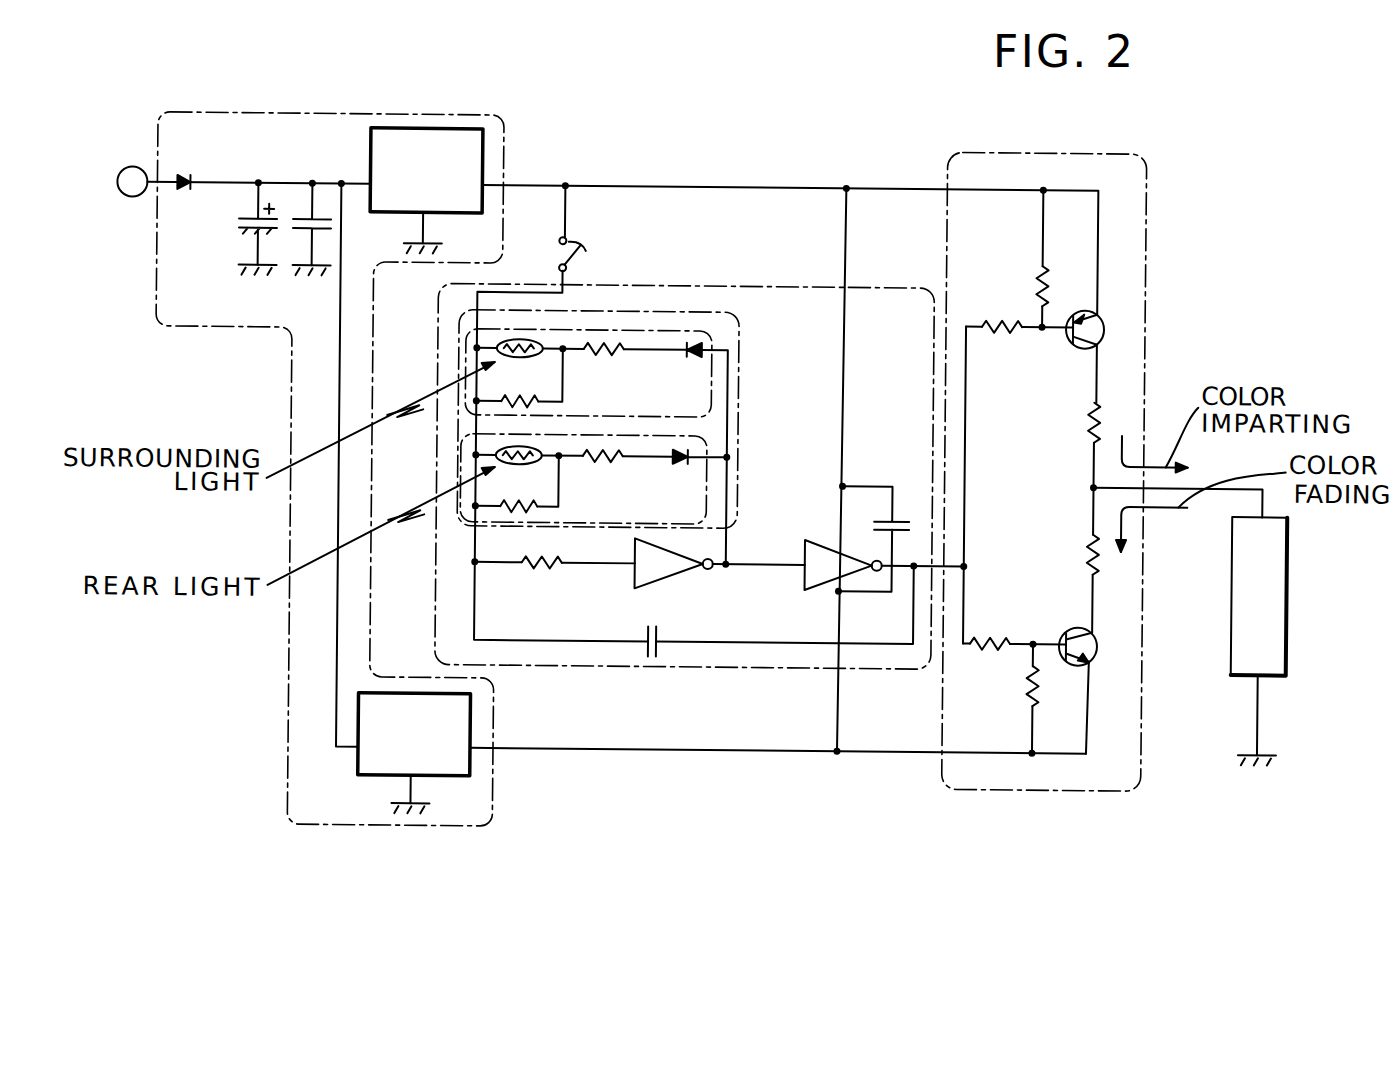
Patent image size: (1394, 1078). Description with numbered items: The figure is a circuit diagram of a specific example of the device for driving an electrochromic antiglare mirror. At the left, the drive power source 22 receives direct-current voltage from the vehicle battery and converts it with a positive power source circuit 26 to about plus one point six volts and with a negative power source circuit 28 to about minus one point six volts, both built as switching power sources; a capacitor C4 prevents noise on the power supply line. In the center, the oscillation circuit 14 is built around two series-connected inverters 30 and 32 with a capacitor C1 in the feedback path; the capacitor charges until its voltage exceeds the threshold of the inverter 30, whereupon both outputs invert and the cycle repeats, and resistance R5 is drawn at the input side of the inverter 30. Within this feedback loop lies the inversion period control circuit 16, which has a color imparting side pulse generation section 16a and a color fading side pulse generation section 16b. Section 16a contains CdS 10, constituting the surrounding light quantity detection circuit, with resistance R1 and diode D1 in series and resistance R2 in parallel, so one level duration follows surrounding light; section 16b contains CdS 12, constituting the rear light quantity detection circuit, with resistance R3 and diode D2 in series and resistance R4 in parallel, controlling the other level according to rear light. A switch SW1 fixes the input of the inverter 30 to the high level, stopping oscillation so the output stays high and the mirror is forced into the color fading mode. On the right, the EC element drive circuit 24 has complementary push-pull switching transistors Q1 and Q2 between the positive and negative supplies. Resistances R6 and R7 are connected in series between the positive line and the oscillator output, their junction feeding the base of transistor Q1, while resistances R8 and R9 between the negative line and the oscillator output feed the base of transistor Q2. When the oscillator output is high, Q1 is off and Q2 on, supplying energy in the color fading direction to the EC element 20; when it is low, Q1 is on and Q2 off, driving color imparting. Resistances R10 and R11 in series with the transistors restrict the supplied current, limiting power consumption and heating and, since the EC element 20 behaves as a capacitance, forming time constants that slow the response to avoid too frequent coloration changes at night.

The surrounding light quantity detection circuit 10 is at (546, 358).
The rear light quantity detection circuit 12 is at (546, 465).
The oscillation circuit 14 is at (690, 668).
The inversion period control circuit 16 is at (643, 311).
The color imparting side pulse generation section 16a is at (678, 332).
The color fading side pulse generation section 16b is at (742, 440).
The EC element 20 is at (1288, 593).
The drive power source 22 is at (254, 119).
The EC element drive circuit 24 is at (1148, 370).
The positive power source circuit 26 is at (395, 131).
The negative power source circuit 28 is at (474, 766).
The inverter 30 is at (689, 571).
The inverter 32 is at (818, 592).
The switch SW1 is at (602, 229).
The resistance R1 is at (598, 357).
The resistance R2 is at (499, 400).
The resistance R3 is at (598, 464).
The resistance R4 is at (503, 505).
The resistor R5 is at (553, 572).
The resistance R6 is at (1004, 318).
The resistance R7 is at (1027, 275).
The resistance R8 is at (1005, 640).
The resistance R9 is at (1030, 690).
The resistance R10 is at (1086, 410).
The resistance R11 is at (1085, 543).
The diode D1 is at (676, 357).
The diode D2 is at (676, 464).
The capacitor C1 is at (641, 656).
The capacitor C4 is at (901, 512).
The switching transistor Q1 is at (1100, 318).
The switching transistor Q2 is at (1100, 635).